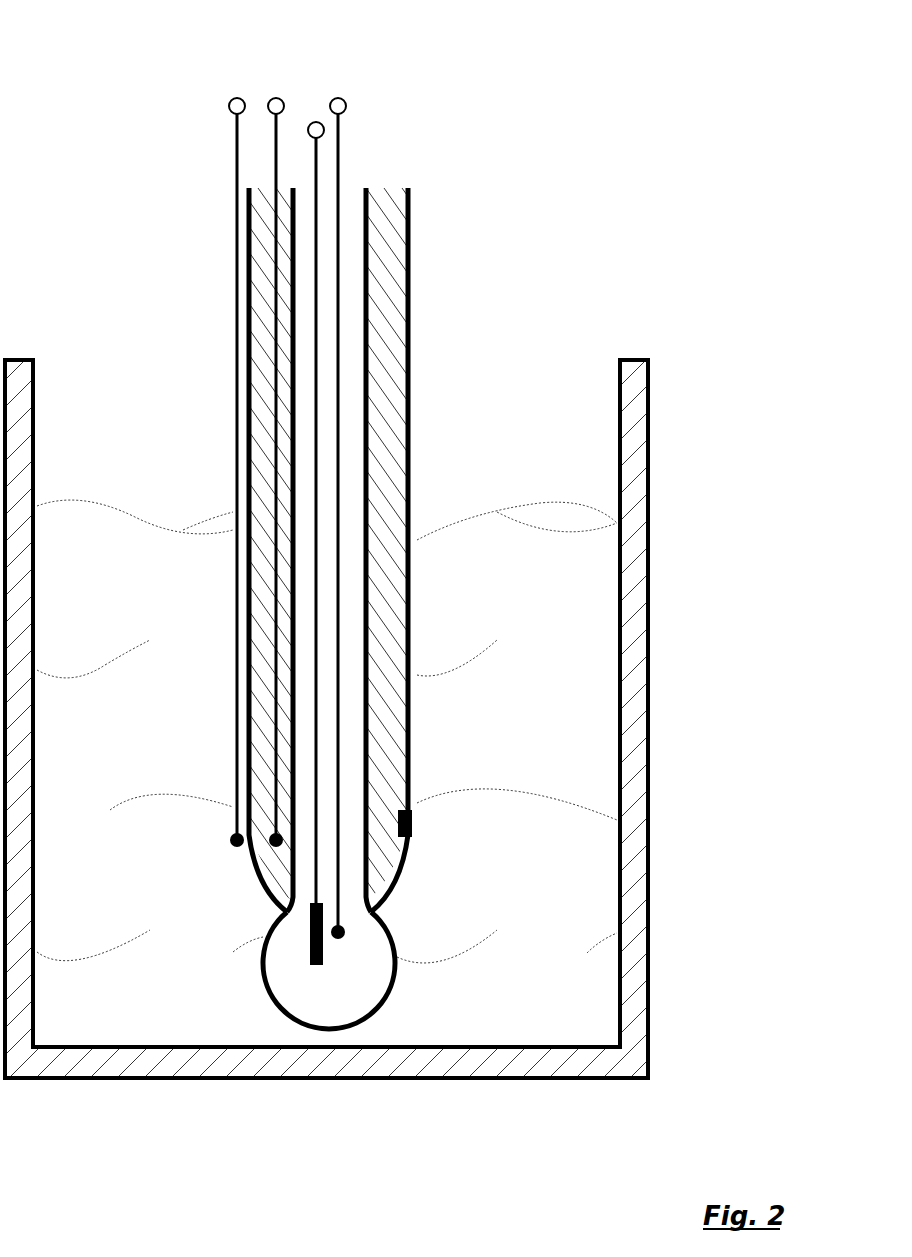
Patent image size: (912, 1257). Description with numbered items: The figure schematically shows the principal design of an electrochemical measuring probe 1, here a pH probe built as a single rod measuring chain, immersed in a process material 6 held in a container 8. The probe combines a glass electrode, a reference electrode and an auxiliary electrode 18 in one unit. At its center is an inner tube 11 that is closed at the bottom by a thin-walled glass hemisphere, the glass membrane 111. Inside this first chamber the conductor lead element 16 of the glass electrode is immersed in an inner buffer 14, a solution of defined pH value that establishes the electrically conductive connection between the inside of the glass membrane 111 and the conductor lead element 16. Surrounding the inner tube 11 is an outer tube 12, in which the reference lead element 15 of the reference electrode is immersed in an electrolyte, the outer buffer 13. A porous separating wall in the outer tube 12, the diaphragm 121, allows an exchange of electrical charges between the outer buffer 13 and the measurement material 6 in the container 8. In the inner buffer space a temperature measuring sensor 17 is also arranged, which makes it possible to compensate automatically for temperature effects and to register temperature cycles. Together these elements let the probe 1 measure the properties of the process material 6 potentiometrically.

The electrochemical measuring probe 1 is at (140, 130).
The process material 6 is at (603, 637).
The container 8 is at (650, 637).
The inner tube 11 is at (400, 262).
The outer tube 12 is at (413, 302).
The outer buffer 13 is at (389, 540).
The inner buffer 14 is at (348, 386).
The reference lead element 15 is at (273, 450).
The conductor lead element 16 is at (337, 448).
The temperature measuring sensor 17 is at (308, 268).
The auxiliary electrode 18 is at (235, 305).
The glass membrane 111 is at (397, 948).
The diaphragm 121 is at (410, 820).